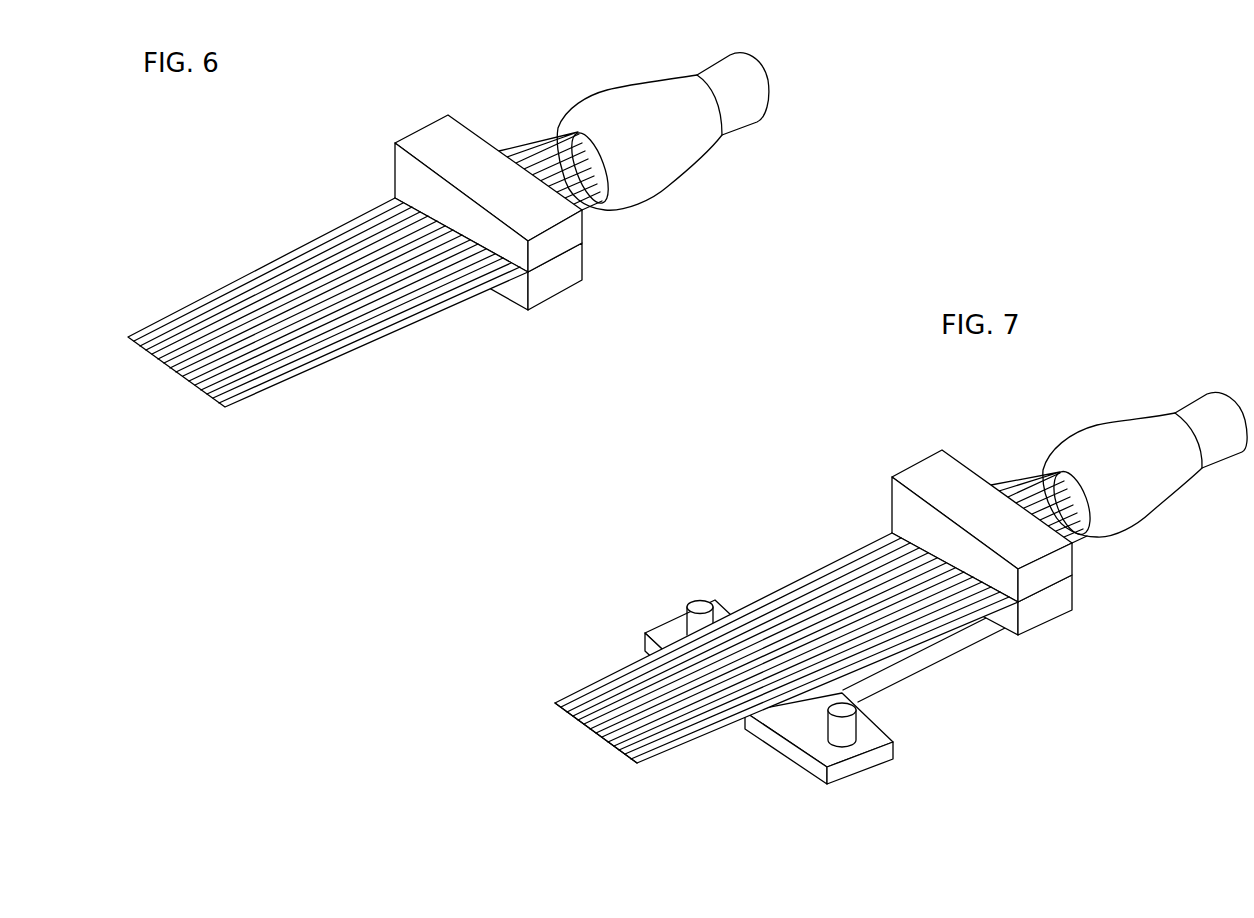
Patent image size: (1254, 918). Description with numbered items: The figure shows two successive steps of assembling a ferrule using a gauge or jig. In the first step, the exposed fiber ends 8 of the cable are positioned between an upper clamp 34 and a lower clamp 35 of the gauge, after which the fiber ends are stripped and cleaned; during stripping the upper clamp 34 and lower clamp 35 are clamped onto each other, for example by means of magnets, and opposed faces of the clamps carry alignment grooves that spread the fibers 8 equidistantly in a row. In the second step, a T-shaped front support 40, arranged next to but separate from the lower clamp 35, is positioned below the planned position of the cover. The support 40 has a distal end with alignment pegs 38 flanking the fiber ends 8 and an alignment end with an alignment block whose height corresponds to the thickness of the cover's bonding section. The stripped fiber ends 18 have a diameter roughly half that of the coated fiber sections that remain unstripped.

In FIG. 6, the fiber ends 8 is at (176, 367).
In FIG. 7, the fiber ends 8 is at (812, 573).
In FIG. 7, the stripped fiber ends 18 is at (650, 757).
In FIG. 6, the upper clamp 34 is at (570, 238).
In FIG. 7, the upper clamp 34 is at (1063, 560).
In FIG. 6, the lower clamp 35 is at (568, 288).
In FIG. 7, the lower clamp 35 is at (1057, 610).
In FIG. 7, the alignment pegs 38 is at (706, 600).
In FIG. 7, the T-shaped front support 40 is at (925, 667).